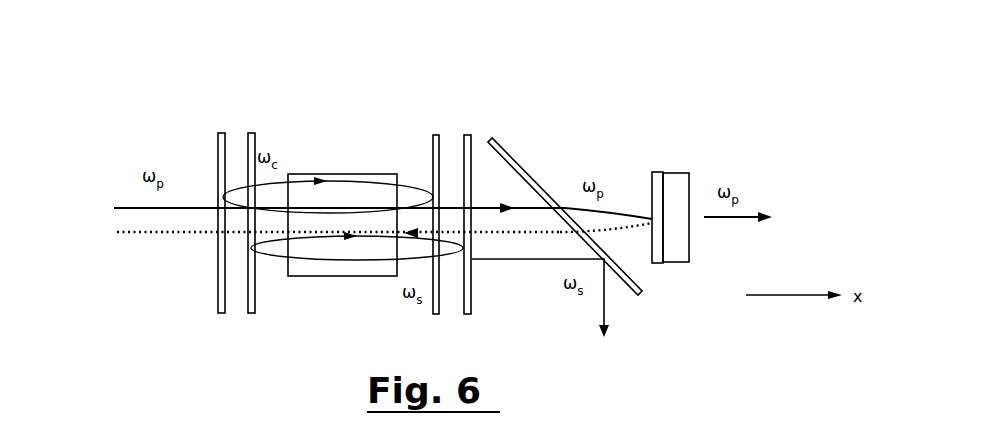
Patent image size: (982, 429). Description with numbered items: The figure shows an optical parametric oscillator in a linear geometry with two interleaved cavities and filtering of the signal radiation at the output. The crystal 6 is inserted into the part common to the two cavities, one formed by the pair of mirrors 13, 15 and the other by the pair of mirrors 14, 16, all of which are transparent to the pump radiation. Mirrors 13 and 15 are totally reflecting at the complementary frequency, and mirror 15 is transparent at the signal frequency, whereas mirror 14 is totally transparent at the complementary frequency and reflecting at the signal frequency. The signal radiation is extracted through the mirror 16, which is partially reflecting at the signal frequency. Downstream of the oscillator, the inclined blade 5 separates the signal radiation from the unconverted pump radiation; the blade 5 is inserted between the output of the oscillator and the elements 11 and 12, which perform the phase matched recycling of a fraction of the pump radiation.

The blade 5 is at (499, 139).
The crystal 6 is at (300, 268).
The pump recycling element 11 is at (662, 263).
The pump recycling element 12 is at (678, 250).
The mirror 13 is at (221, 133).
The mirror 14 is at (252, 133).
The mirror 15 is at (436, 135).
The mirror 16 is at (469, 135).